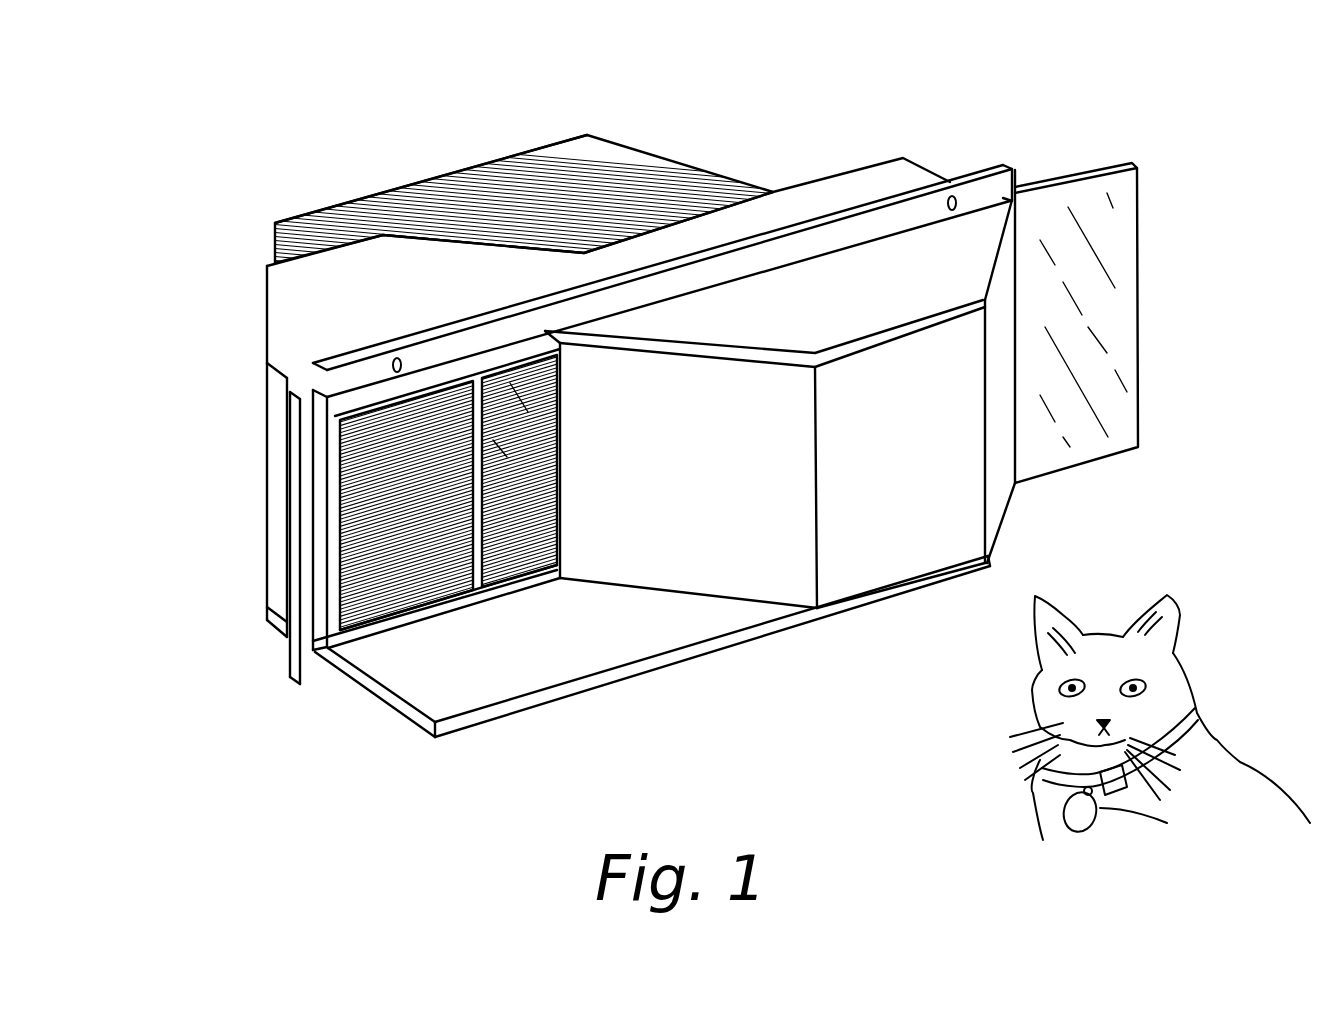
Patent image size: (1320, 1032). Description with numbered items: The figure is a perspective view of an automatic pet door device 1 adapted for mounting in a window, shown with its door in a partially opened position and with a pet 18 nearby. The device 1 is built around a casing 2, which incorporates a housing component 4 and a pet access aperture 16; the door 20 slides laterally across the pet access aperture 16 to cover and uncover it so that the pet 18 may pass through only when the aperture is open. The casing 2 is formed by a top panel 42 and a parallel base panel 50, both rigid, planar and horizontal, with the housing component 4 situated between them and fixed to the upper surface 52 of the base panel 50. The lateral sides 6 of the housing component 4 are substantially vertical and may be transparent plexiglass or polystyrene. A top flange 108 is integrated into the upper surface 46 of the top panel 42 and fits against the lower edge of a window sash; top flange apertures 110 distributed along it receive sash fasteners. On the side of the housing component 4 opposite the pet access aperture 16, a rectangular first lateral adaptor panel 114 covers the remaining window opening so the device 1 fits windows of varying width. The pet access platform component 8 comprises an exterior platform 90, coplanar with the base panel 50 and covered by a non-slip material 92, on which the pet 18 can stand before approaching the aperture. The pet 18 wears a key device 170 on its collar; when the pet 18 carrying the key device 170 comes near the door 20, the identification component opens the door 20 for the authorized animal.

The automatic pet door device 1 is at (813, 664).
The casing 2 is at (960, 148).
The housing component 4 is at (975, 527).
The lateral sides 6 is at (280, 572).
The pet access platform component 8 is at (476, 137).
The pet access aperture 16 is at (388, 498).
The pet 18 is at (1185, 670).
The door 20 is at (510, 528).
The top panel 42 is at (268, 314).
The upper surface 46 is at (327, 292).
The base panel 50 is at (610, 687).
The upper surface 52 is at (510, 680).
The exterior platform 90 is at (595, 138).
The non-slip material 92 is at (660, 183).
The top flange 108 is at (1017, 184).
The top flange apertures 110 is at (392, 366).
The first lateral adaptor panel 114 is at (1145, 330).
The key device 170 is at (1167, 823).